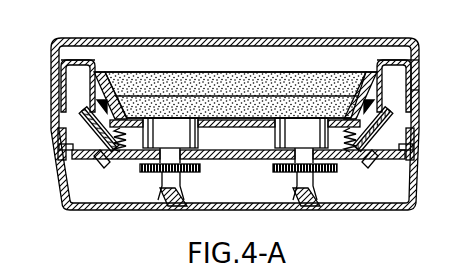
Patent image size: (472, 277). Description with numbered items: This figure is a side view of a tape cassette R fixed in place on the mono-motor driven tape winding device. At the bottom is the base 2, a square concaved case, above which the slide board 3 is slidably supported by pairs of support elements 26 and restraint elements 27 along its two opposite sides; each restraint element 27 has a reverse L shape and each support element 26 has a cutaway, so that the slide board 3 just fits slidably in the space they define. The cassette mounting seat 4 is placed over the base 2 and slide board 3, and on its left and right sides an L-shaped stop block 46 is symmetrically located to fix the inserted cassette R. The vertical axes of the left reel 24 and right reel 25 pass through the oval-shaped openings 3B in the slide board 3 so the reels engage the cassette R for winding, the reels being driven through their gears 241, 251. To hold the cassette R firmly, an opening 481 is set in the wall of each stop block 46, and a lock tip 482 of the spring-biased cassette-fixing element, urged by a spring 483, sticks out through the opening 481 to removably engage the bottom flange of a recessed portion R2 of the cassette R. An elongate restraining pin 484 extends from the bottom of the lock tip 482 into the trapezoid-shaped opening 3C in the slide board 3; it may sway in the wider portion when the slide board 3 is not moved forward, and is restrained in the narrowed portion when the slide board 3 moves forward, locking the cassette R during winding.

The base 2 is at (337, 210).
The slide board 3 is at (238, 161).
The oval-shaped opening 3B is at (235, 134).
The opening 3C is at (116, 162).
The cassette mounting seat 4 is at (414, 73).
The L-shaped stop block 46 is at (416, 98).
The left reel 24 is at (181, 120).
The right reel 25 is at (293, 120).
The support element 26 is at (57, 146).
The restraint element 27 is at (60, 132).
The gear 241 is at (192, 173).
The gear 251 is at (273, 173).
The opening 481 is at (236, 86).
The lock tip 482 is at (78, 110).
The spring 483 is at (124, 132).
The restraining pin 484 is at (102, 167).
The tape cassette R is at (290, 70).
The recessed portion R2 is at (86, 62).